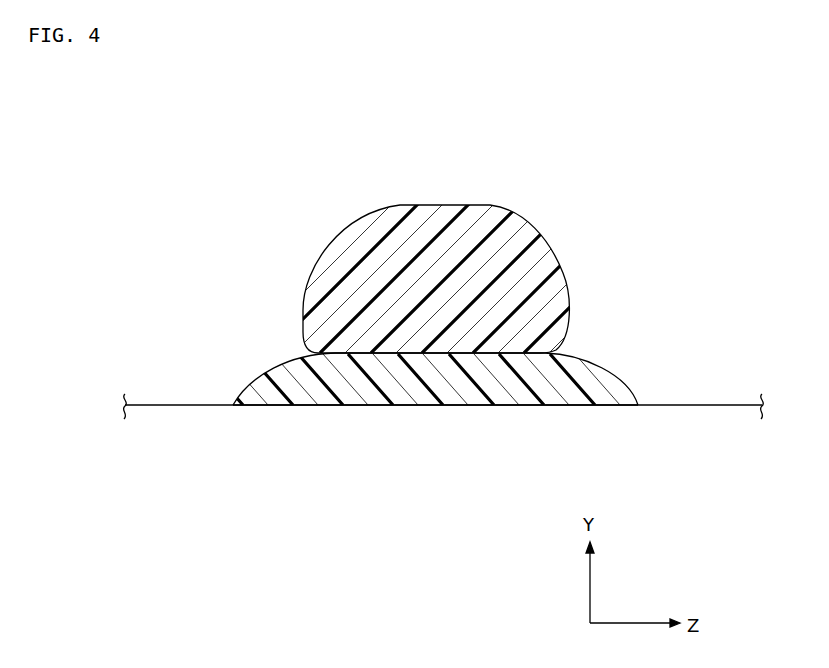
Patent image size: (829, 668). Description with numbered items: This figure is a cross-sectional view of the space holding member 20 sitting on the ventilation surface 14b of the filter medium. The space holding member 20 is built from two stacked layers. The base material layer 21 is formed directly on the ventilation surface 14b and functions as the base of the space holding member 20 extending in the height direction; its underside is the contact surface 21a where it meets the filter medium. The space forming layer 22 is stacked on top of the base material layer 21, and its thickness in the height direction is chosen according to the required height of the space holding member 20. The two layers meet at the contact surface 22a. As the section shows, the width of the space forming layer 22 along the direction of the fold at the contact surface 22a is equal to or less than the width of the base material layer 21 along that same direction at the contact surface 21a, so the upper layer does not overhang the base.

The ventilation surface 14b is at (193, 404).
The space holding member 20 is at (441, 302).
The base material layer 21 is at (421, 399).
The contact surface 21a is at (596, 406).
The space forming layer 22 is at (476, 275).
The contact surface 22a is at (548, 352).